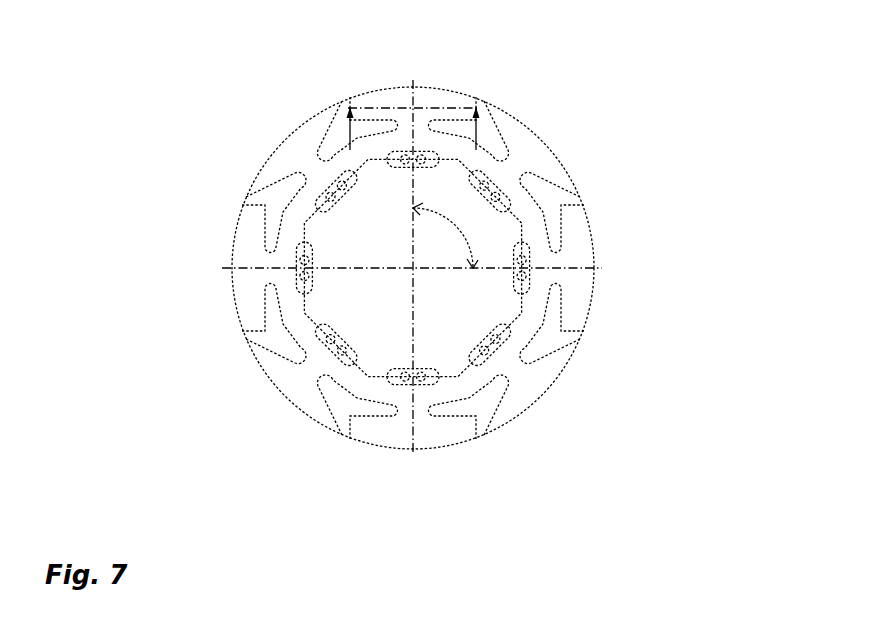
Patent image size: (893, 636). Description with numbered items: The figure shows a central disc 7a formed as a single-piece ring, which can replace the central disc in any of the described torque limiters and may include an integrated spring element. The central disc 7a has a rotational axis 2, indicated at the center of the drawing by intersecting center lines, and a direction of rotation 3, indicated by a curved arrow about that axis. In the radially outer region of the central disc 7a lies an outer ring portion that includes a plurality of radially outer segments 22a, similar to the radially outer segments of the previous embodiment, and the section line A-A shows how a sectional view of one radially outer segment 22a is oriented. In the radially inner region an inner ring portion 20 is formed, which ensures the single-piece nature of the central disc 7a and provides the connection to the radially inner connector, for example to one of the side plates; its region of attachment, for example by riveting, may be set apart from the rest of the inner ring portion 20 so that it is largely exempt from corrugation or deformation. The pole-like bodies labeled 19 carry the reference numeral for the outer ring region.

The central disc 7a is at (412, 236).
The rotational axis 2 is at (450, 288).
The direction of rotation 3 is at (529, 225).
The pole piece 19 is at (529, 195).
The inner ring portion 20 is at (333, 266).
The radially outer segment 22a is at (465, 268).